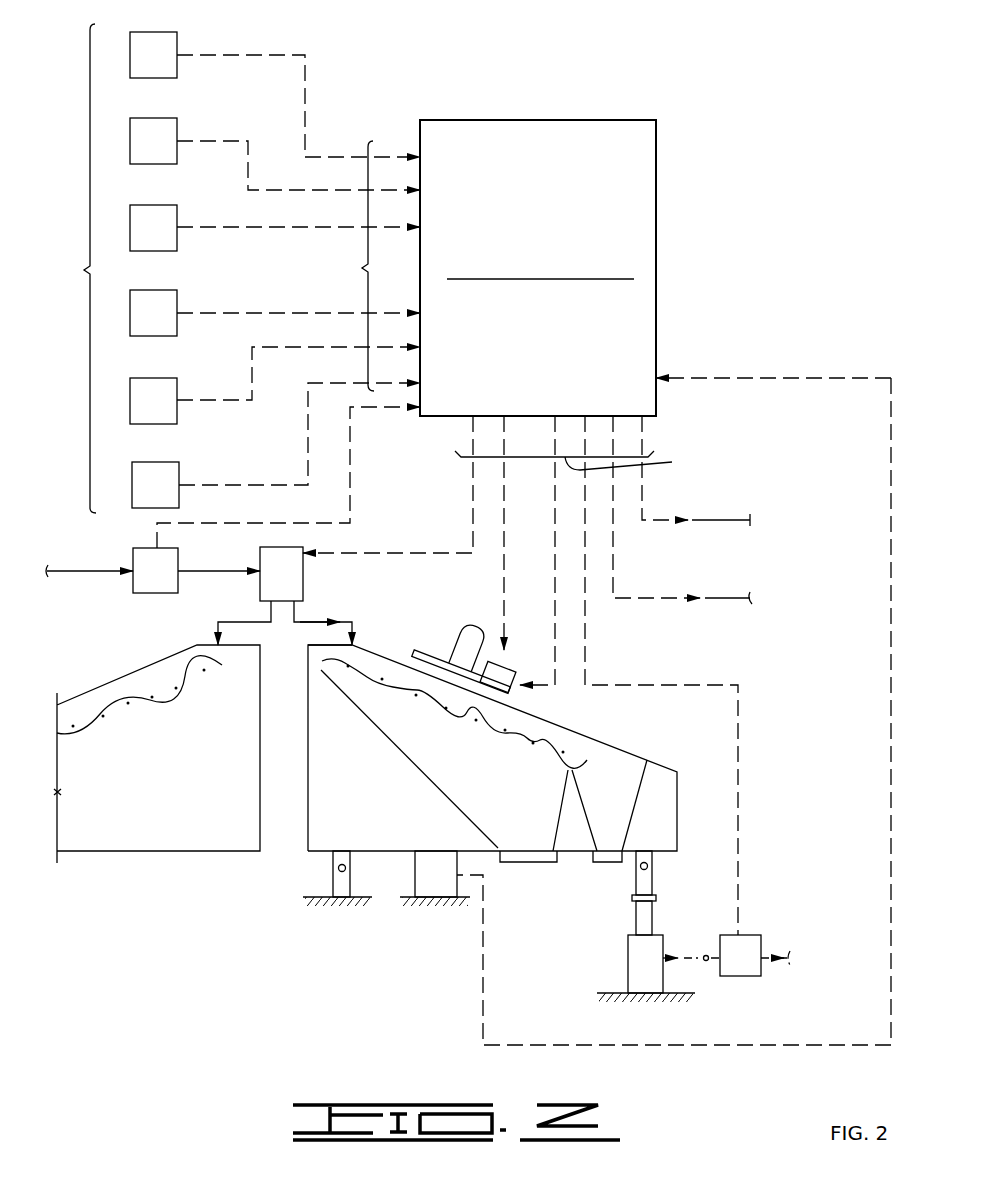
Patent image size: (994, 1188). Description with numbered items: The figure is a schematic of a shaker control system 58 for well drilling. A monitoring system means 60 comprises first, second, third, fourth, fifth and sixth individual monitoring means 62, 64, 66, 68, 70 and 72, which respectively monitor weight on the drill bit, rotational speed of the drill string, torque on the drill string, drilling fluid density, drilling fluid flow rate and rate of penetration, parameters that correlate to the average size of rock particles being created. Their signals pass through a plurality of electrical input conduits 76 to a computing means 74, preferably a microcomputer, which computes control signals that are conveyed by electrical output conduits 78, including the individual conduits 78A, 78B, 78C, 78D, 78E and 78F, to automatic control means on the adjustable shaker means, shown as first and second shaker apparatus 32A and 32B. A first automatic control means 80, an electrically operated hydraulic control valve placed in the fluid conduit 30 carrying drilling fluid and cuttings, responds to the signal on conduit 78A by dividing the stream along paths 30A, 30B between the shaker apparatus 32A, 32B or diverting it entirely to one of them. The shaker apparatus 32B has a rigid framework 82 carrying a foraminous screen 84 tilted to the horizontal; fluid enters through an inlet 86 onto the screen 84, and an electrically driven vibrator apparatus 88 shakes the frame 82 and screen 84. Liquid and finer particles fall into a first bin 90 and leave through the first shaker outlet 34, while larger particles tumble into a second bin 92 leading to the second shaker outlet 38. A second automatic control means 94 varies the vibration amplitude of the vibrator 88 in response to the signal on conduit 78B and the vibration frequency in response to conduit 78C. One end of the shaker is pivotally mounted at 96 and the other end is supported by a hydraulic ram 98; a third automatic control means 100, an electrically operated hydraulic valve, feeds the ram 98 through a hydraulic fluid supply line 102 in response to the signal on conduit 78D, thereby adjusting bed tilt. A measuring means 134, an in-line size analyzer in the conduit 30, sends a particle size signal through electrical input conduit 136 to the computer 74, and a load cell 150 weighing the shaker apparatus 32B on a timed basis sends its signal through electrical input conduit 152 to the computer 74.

The fluid conduit 30 is at (94, 574).
The material flow to first hopper 30A is at (244, 622).
The material flow to second hopper 30B is at (313, 622).
The first shaker apparatus 32A is at (192, 785).
The second shaker apparatus 32B is at (367, 787).
The first shaker outlet 34 is at (540, 865).
The second shaker outlet 38 is at (614, 865).
The shaker control system 58 is at (628, 60).
The monitoring system means 60 is at (73, 268).
The first individual monitoring means 62 is at (166, 66).
The second individual monitoring means 64 is at (166, 152).
The third individual monitoring means 66 is at (166, 239).
The fourth individual monitoring means 68 is at (166, 324).
The fifth individual monitoring means 70 is at (166, 412).
The sixth individual monitoring means 72 is at (168, 496).
The computing means 74 is at (550, 335).
The electrical input conduits 76 is at (362, 268).
The electrical output conduits 78 is at (578, 463).
The electrical output conduit 78A is at (428, 556).
The second electrical output conduit 78B is at (504, 571).
The third electrical output conduit 78C is at (558, 595).
The fourth electrical output conduit 78D is at (742, 886).
The output control line 78E is at (616, 574).
The output control line 78F is at (720, 518).
The first automatic control means 80 is at (294, 585).
The rigid framework 82 is at (606, 758).
The screen 84 is at (450, 720).
The inlet 86 is at (360, 645).
The vibrator apparatus 88 is at (470, 622).
The first bin 90 is at (452, 797).
The second bin 92 is at (581, 797).
The second automatic control means 94 is at (498, 675).
The pivotal mounting 96 is at (332, 862).
The hydraulic ram 98 is at (628, 951).
The third automatic control means 100 is at (756, 966).
The hydraulic fluid supply line 102 is at (792, 956).
The measuring means 134 is at (172, 583).
The electrical input conduit 136 is at (350, 449).
The load cell 150 is at (452, 884).
The electrical input conduit 152 is at (486, 996).